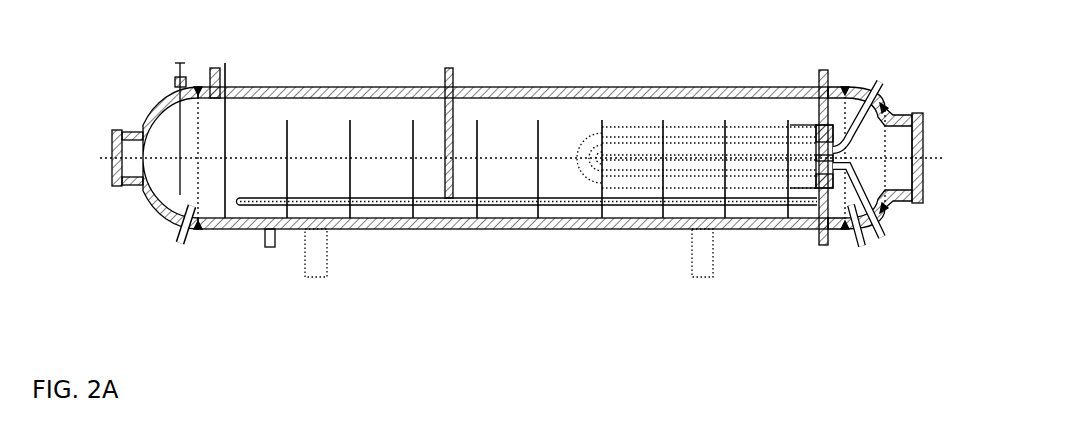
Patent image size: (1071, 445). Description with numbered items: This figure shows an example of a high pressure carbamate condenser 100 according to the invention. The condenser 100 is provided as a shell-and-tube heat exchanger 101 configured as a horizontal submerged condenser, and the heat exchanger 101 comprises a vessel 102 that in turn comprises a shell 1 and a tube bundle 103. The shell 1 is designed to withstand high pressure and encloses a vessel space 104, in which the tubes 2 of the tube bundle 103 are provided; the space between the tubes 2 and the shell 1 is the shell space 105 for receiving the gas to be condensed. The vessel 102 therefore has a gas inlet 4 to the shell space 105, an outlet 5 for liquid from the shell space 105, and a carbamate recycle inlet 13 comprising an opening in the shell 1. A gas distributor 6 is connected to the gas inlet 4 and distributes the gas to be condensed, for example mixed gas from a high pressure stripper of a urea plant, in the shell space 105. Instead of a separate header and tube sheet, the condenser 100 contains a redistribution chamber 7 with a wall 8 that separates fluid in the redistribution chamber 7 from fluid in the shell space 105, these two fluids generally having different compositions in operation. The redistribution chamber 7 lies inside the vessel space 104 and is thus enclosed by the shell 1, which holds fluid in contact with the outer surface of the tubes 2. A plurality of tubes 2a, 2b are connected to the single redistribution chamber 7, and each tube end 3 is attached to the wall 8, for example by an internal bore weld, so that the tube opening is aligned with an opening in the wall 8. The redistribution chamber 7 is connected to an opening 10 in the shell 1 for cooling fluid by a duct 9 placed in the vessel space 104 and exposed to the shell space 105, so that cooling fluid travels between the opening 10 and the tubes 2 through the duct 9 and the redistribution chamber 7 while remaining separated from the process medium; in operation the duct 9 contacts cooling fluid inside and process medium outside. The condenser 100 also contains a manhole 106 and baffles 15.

The shell 1 is at (767, 92).
The tubes 2 is at (633, 128).
The tube 2a is at (803, 128).
The tube 2b is at (813, 188).
The tube end 3 is at (824, 130).
The gas inlet 4 is at (453, 70).
The outlet 5 is at (177, 242).
The gas distributor 6 is at (668, 200).
The redistribution chamber 7 is at (862, 110).
The wall 8 is at (820, 190).
The duct 9 is at (882, 228).
The opening 10 is at (882, 210).
The carbamate recycle inlet 13 is at (864, 244).
The baffles 15 is at (287, 132).
The carbamate condenser 100 is at (425, 33).
The shell-and-tube heat exchanger 101 is at (425, 33).
The vessel 102 is at (425, 33).
The tube bundle 103 is at (592, 173).
The vessel space 104 is at (890, 158).
The shell space 105 is at (527, 152).
The manhole 106 is at (111, 138).